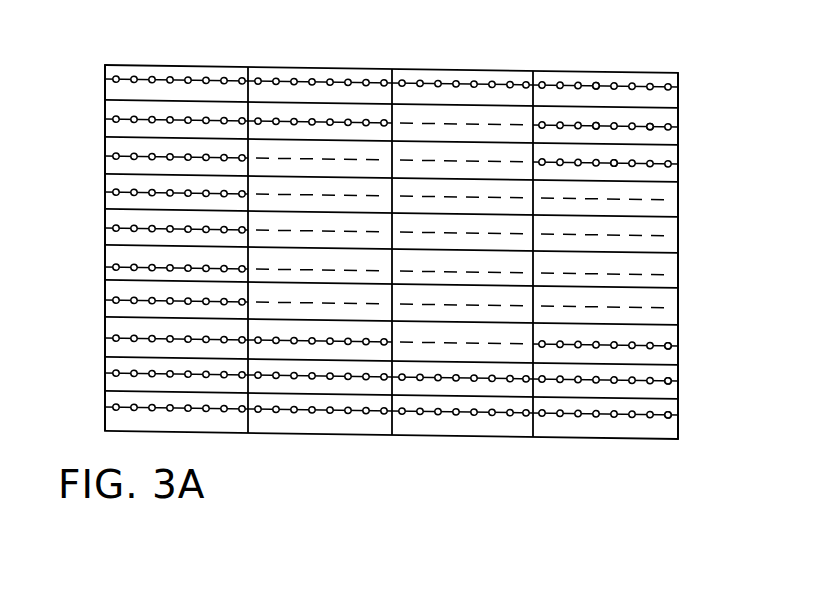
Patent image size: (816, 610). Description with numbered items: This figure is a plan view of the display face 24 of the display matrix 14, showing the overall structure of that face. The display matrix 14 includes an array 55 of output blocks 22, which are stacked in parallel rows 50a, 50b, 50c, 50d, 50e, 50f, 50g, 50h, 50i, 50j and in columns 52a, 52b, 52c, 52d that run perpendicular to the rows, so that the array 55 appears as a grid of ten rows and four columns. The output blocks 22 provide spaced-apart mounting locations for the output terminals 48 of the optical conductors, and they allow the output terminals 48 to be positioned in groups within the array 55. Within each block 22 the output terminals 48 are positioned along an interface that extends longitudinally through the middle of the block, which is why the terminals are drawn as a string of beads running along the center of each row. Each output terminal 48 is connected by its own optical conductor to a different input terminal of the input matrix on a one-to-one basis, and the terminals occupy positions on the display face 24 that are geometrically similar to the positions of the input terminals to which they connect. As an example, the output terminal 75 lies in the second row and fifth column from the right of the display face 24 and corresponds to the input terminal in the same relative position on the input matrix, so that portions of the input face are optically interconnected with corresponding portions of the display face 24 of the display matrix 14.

The display matrix 14 is at (248, 457).
The output blocks 22 is at (672, 353).
The display face 24 is at (465, 437).
The output terminals 48 is at (598, 92).
The row 50a is at (105, 79).
The row 50b is at (105, 119).
The row 50c is at (105, 156).
The row 50d is at (105, 192).
The row 50e is at (105, 228).
The row 50f is at (105, 267).
The row 50g is at (105, 300).
The row 50h is at (105, 338).
The row 50i is at (105, 373).
The row 50j is at (105, 407).
The column 52a is at (610, 73).
The column 52b is at (468, 71).
The column 52c is at (325, 68).
The column 52d is at (183, 65).
The array 55 is at (680, 265).
The output terminal 75 is at (596, 128).